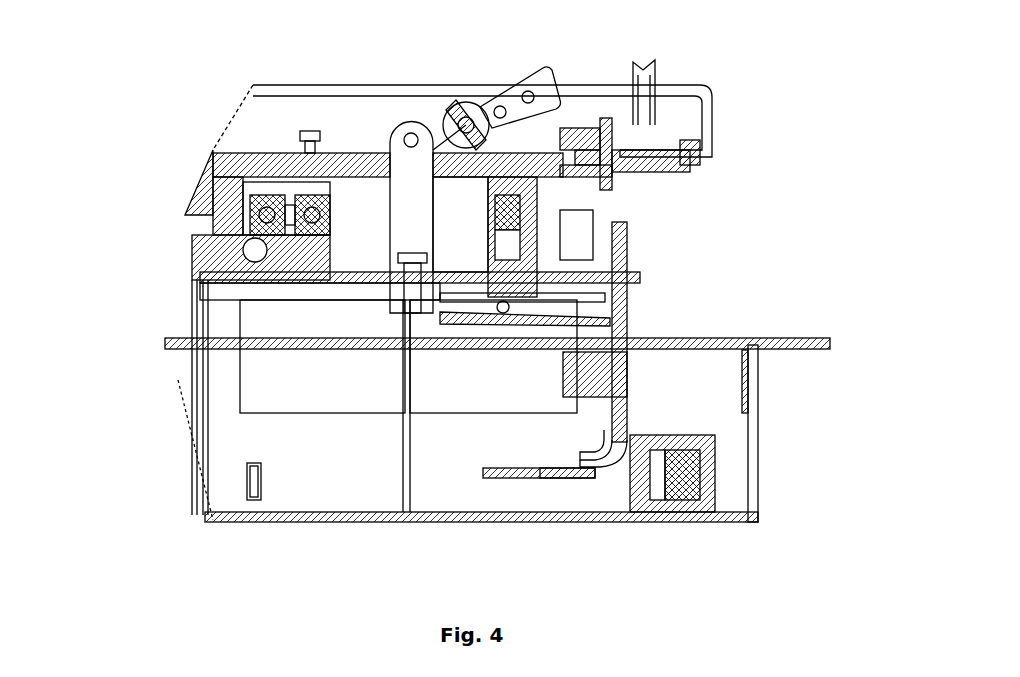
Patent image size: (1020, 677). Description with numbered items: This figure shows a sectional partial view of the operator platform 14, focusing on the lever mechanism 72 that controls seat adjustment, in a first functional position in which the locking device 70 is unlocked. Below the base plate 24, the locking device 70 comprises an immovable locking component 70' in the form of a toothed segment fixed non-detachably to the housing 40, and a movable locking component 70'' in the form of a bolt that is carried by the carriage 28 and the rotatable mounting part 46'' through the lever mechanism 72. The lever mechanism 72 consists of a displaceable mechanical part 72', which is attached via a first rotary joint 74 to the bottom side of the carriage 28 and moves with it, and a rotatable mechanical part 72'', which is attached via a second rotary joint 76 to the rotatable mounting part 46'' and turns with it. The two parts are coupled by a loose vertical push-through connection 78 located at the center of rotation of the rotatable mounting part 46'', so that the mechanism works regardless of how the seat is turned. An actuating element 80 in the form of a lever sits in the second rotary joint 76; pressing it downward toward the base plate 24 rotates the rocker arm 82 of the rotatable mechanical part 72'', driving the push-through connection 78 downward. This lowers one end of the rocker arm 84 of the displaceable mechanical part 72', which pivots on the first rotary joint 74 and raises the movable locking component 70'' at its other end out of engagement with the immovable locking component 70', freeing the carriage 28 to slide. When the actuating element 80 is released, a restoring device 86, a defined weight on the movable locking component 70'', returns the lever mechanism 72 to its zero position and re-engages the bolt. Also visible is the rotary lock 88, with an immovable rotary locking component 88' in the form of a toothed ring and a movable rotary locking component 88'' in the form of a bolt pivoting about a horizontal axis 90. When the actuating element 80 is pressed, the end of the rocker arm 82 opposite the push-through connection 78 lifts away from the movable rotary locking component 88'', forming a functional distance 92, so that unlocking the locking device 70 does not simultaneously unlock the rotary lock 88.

The operator platform 14 is at (188, 152).
The base plate 24 is at (698, 335).
The carriage 28 is at (598, 290).
The housing 40 is at (753, 530).
The rotatable mounting part 46'' is at (658, 237).
The locking device 70 is at (471, 529).
The immovable locking component 70' is at (523, 529).
The movable locking component 70'' is at (631, 510).
The lever mechanism 72 is at (207, 256).
The displaceable mechanical part 72' is at (244, 365).
The rotatable mechanical part 72'' is at (294, 203).
The first rotary joint 74 is at (495, 317).
The second rotary joint 76 is at (463, 120).
The push-through connection 78 is at (400, 320).
The actuating element 80 is at (472, 120).
The rocker arm 82 is at (425, 115).
The rocker arm 84 is at (540, 320).
The restoring device 86 is at (592, 385).
The rotary lock 88 is at (718, 98).
The immovable rotary locking component 88' is at (721, 190).
The movable rotary locking component 88'' is at (744, 131).
The horizontal axis 90 is at (597, 130).
The functional distance 92 is at (565, 113).